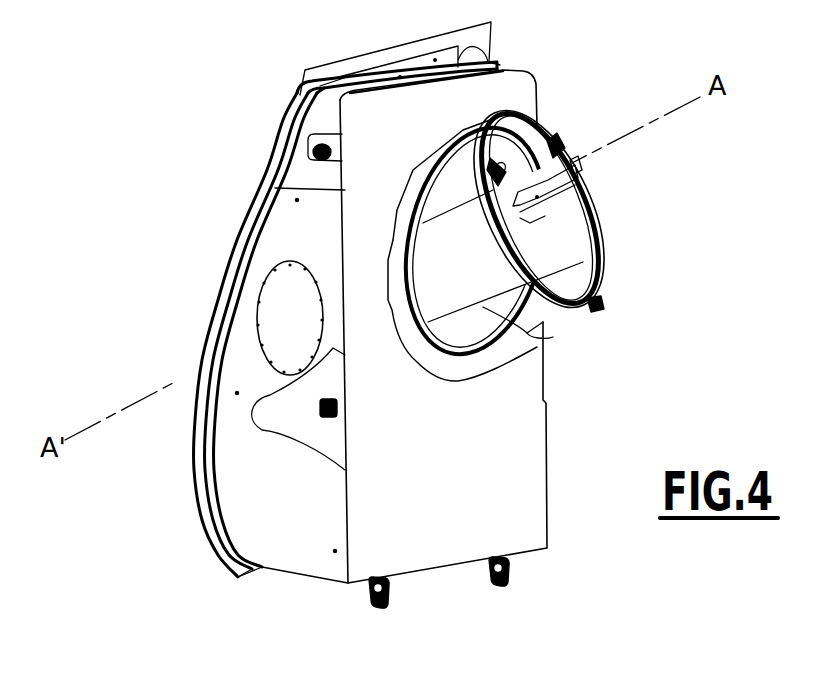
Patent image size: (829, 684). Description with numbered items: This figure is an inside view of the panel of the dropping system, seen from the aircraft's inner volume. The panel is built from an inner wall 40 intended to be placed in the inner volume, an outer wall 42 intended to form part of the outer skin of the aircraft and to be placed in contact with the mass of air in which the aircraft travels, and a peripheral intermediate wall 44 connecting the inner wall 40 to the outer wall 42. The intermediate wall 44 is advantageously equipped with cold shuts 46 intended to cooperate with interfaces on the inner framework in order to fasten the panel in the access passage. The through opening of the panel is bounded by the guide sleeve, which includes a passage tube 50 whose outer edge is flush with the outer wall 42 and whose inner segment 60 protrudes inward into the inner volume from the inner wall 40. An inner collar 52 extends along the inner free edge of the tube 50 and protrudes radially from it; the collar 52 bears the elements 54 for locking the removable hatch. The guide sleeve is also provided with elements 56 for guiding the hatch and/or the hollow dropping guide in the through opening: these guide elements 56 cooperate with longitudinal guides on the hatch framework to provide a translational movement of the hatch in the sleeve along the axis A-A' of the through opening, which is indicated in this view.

The inner wall 40 is at (492, 483).
The outer wall 42 is at (197, 475).
The peripheral intermediate wall 44 is at (297, 543).
The cold shuts 46 is at (304, 134).
The passage tube 50 is at (553, 242).
The inner collar 52 is at (578, 158).
The elements for locking the hatch 54 is at (558, 143).
The elements for guiding the hatch and/or the guide 56 is at (593, 212).
The inner segment 60 is at (486, 309).